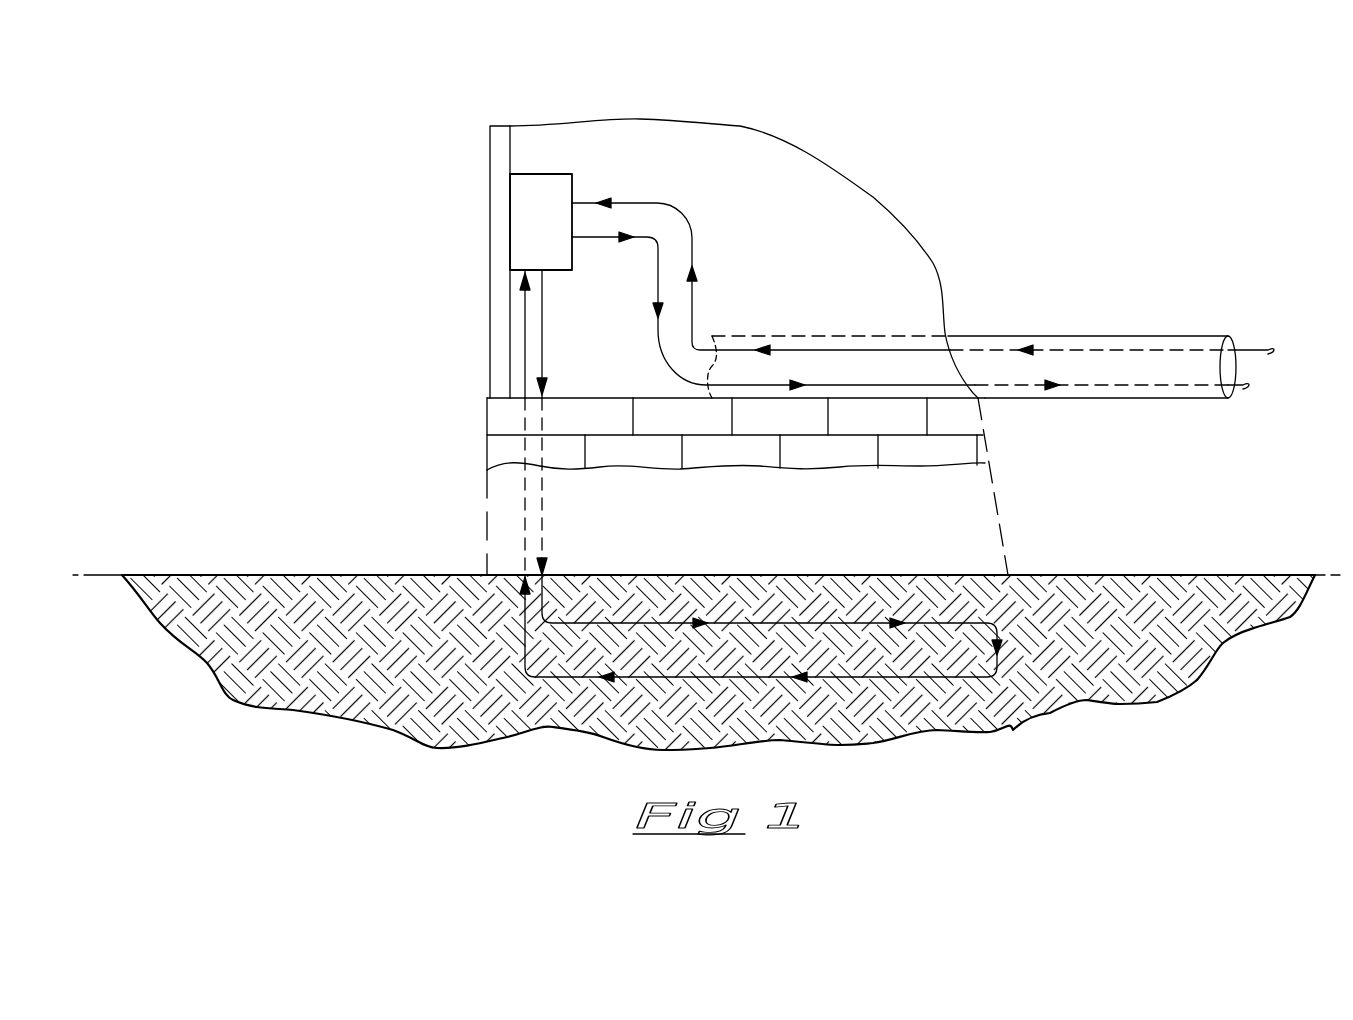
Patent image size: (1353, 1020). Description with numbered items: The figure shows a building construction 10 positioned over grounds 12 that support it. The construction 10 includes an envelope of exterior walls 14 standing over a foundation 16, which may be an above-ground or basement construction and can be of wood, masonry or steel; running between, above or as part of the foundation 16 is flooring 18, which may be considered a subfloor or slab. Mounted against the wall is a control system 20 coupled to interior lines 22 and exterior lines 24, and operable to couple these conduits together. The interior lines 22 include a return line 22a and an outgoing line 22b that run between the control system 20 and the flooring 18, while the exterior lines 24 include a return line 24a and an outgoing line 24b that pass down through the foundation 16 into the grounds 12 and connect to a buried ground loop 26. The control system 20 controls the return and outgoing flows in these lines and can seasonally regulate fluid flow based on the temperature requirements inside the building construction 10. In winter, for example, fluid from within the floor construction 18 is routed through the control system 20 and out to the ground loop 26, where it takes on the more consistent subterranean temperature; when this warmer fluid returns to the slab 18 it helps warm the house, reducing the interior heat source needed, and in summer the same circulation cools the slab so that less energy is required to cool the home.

The building construction 10 is at (360, 113).
The grounds 12 is at (314, 575).
The exterior walls 14 is at (490, 205).
The foundation 16 is at (497, 450).
The flooring 18 is at (1101, 337).
The control system 20 is at (556, 225).
The interior lines 22 is at (923, 263).
The return line 22a is at (693, 309).
The outgoing line 22b is at (657, 333).
The exterior lines 24 is at (510, 419).
The return line 24a is at (525, 373).
The outgoing line 24b is at (542, 357).
The ground loop 26 is at (1000, 633).